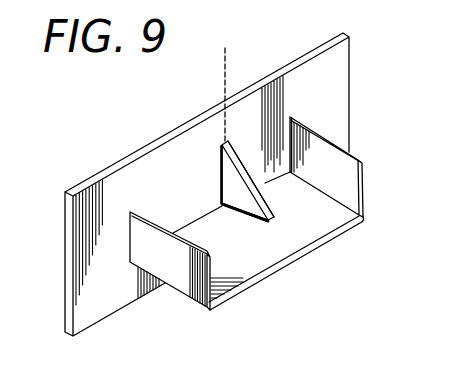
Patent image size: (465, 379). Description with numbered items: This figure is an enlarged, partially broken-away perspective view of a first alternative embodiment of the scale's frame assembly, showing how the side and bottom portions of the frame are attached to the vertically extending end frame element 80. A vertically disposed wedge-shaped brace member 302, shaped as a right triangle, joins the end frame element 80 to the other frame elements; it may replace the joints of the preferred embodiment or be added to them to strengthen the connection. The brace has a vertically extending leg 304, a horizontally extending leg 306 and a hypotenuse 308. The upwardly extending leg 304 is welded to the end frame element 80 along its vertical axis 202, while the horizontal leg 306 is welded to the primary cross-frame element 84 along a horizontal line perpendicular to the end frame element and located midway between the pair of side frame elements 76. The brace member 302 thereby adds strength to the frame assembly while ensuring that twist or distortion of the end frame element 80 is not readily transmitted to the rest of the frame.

The end frame element 80 is at (343, 82).
The side frame elements 76 is at (187, 287).
The primary cross-frame element 84 is at (332, 226).
The wedge-shaped brace member 302 is at (281, 221).
The vertically extending leg 304 is at (218, 167).
The horizontally extending leg 306 is at (242, 222).
The hypotenuse 308 is at (242, 168).
The vertical axis 202 is at (226, 81).